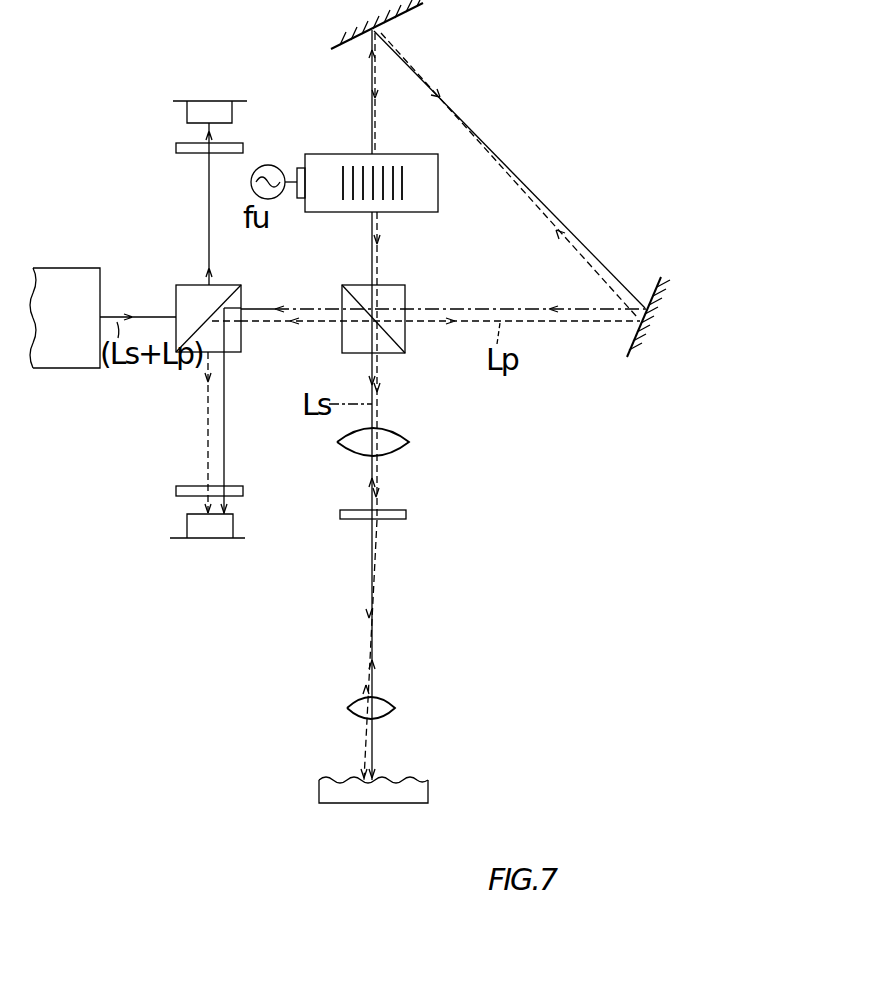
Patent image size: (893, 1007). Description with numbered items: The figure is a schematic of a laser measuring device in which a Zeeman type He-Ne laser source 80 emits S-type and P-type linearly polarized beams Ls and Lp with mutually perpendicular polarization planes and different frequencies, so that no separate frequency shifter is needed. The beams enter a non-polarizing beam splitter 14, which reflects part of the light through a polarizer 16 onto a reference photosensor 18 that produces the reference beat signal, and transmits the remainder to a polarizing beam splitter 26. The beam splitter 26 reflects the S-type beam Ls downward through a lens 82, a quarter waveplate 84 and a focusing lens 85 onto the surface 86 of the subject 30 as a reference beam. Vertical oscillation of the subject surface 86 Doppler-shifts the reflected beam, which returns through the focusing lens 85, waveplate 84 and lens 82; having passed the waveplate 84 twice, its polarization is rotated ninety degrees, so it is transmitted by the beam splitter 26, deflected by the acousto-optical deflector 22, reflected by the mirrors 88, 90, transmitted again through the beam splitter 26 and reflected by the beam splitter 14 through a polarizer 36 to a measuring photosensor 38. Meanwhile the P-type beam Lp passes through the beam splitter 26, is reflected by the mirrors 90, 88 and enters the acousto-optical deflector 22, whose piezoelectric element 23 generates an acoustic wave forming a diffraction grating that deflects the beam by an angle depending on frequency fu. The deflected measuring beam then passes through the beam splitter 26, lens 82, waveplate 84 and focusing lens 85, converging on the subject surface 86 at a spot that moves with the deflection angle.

The non-polarizing beam splitter 14 is at (189, 291).
The polarizer 16 is at (177, 148).
The reference photosensor 18 is at (188, 112).
The acousto-optical deflector 22 is at (322, 166).
The piezoelectric element 23 is at (301, 199).
The polarizing beam splitter 26 is at (390, 296).
The subject 30 is at (373, 771).
The polarizer 36 is at (185, 488).
The measuring photosensor 38 is at (188, 529).
The Zeeman type He-Ne laser source 80 is at (69, 278).
The lens 82 is at (392, 446).
The quarter waveplate 84 is at (406, 514).
The focusing lens 85 is at (385, 708).
The subject surface 86 is at (350, 780).
The mirror 88 is at (403, 13).
The mirror 90 is at (655, 282).